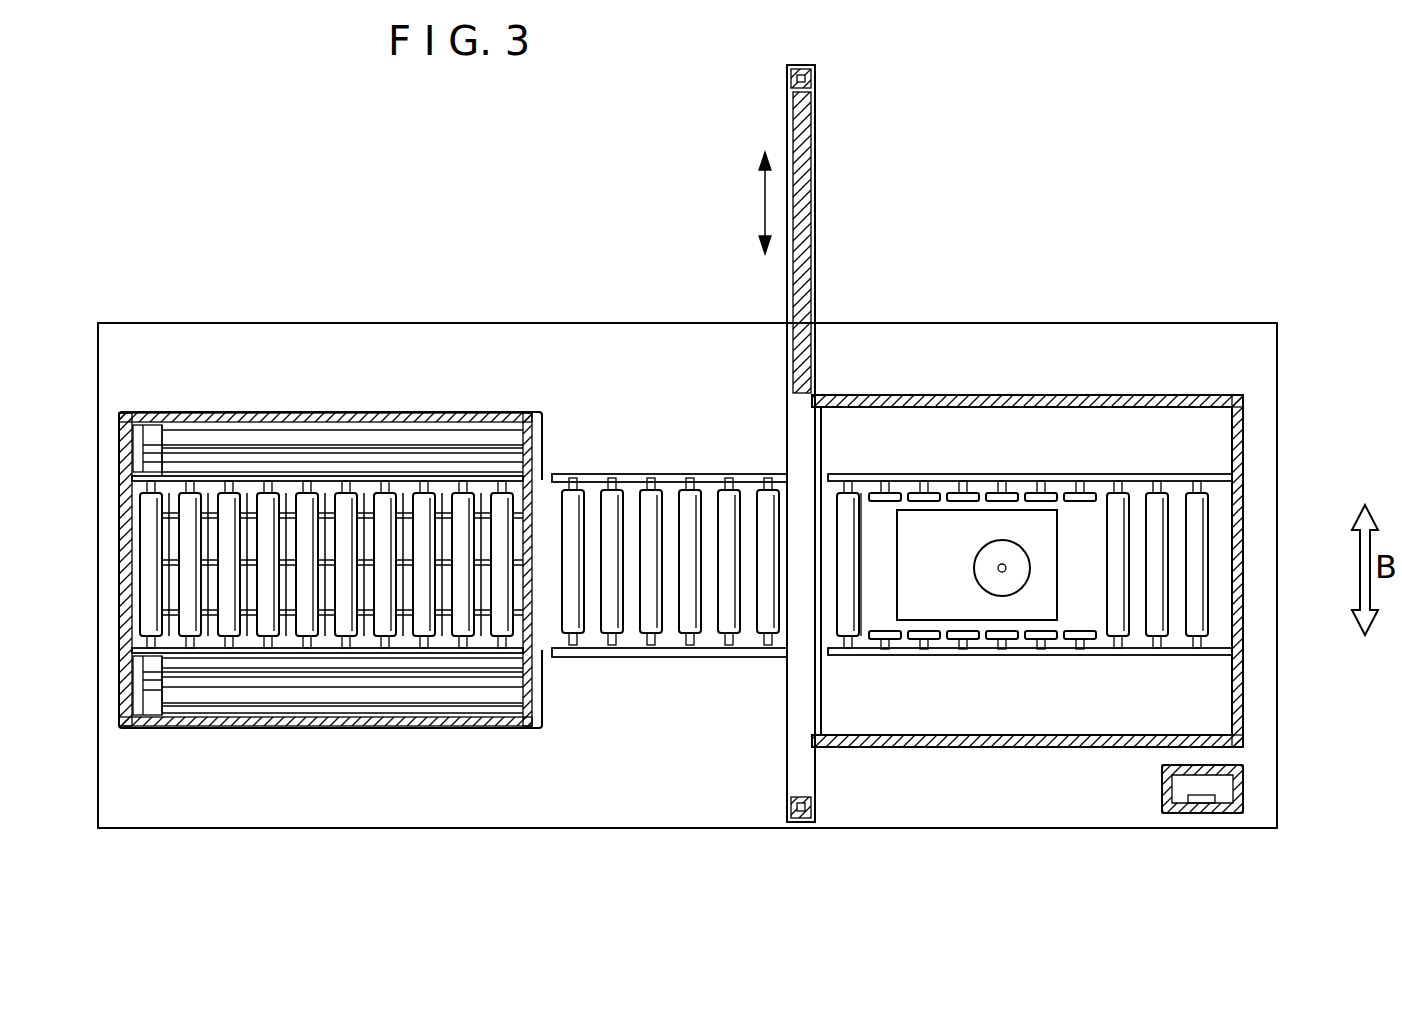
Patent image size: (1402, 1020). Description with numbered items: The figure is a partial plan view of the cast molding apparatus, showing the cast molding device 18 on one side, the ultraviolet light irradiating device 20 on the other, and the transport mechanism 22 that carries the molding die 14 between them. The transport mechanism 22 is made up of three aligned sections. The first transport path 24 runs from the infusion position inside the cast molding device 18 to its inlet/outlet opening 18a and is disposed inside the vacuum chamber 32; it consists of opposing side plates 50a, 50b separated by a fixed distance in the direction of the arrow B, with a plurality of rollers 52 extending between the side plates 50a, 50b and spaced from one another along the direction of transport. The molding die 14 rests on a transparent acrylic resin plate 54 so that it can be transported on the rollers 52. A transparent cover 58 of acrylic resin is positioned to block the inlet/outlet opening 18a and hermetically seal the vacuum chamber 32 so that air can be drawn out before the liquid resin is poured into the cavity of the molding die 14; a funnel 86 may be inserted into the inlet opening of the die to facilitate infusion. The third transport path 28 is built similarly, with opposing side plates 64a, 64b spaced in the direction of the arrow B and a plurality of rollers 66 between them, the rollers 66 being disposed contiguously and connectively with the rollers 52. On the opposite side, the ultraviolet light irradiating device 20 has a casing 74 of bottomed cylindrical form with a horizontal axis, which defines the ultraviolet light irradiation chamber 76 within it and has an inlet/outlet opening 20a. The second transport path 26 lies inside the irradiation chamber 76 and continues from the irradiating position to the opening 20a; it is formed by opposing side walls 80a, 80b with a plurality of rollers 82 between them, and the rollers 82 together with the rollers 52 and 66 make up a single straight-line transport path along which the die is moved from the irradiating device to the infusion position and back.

The molding die 14 is at (952, 612).
The cast molding device 18 is at (1002, 532).
The inlet/outlet opening 18a is at (812, 690).
The ultraviolet light irradiating device 20 is at (450, 262).
The inlet/outlet opening 20a is at (527, 512).
The transport mechanism 22 is at (669, 571).
The first transport path 24 is at (920, 660).
The second transport path 26 is at (432, 655).
The third transport path 28 is at (672, 440).
The vacuum chamber 32 is at (1178, 393).
The side plate 50a is at (1155, 478).
The side plate 50b is at (1165, 655).
The rollers 52 is at (1115, 622).
The transparent acrylic resin plate 54 is at (876, 520).
The transparent cover 58 is at (805, 155).
The side plate 64a is at (740, 475).
The side plate 64b is at (595, 655).
The rollers 66 is at (580, 505).
The casing 74 is at (452, 408).
The ultraviolet light irradiation chamber 76 is at (268, 795).
The side wall 80a is at (330, 478).
The side wall 80b is at (362, 650).
The rollers 82 is at (190, 628).
The funnel 86 is at (1005, 550).